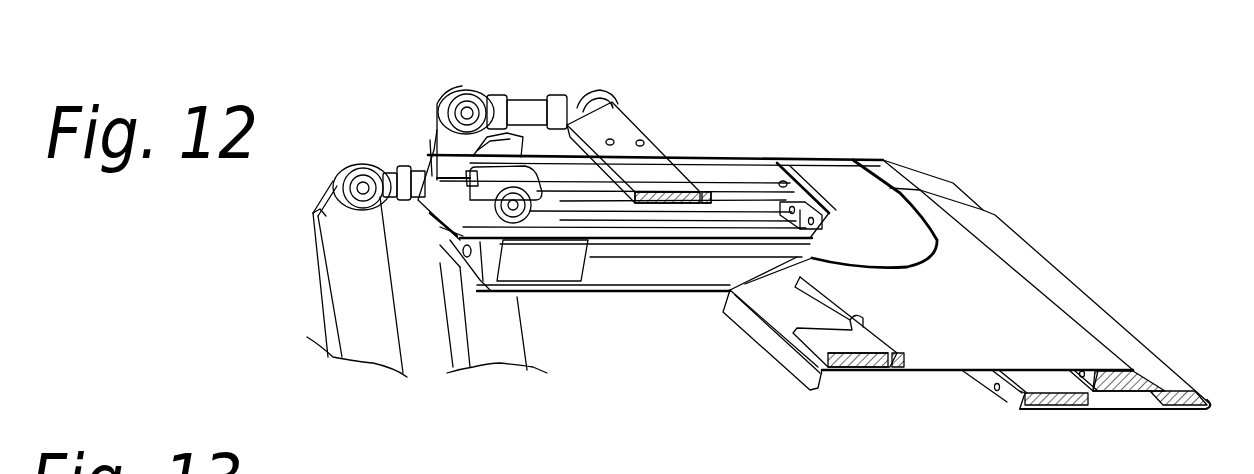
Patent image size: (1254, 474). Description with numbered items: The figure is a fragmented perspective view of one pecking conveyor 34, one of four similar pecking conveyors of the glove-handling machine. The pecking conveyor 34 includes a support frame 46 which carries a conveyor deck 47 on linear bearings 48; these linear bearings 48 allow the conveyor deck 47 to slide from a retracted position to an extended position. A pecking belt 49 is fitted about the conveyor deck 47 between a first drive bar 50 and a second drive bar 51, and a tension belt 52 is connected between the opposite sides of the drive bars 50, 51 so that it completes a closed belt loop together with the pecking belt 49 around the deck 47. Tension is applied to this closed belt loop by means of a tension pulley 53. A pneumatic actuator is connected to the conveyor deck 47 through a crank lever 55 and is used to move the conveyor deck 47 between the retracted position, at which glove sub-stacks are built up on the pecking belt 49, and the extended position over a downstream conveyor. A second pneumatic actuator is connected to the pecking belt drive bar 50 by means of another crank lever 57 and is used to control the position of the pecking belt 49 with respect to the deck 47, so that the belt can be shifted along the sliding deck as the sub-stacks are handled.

The pecking conveyor 34 is at (906, 136).
The support frame 46 is at (600, 277).
The conveyor deck 47 is at (673, 237).
The linear bearings 48 is at (547, 270).
The pecking belt 49 is at (948, 340).
The drive bar 50 is at (670, 177).
The drive bar 51 is at (1032, 409).
The tension belt 52 is at (464, 179).
The tension pulley 53 is at (423, 192).
The crank lever 55 is at (348, 280).
The crank lever 57 is at (507, 353).